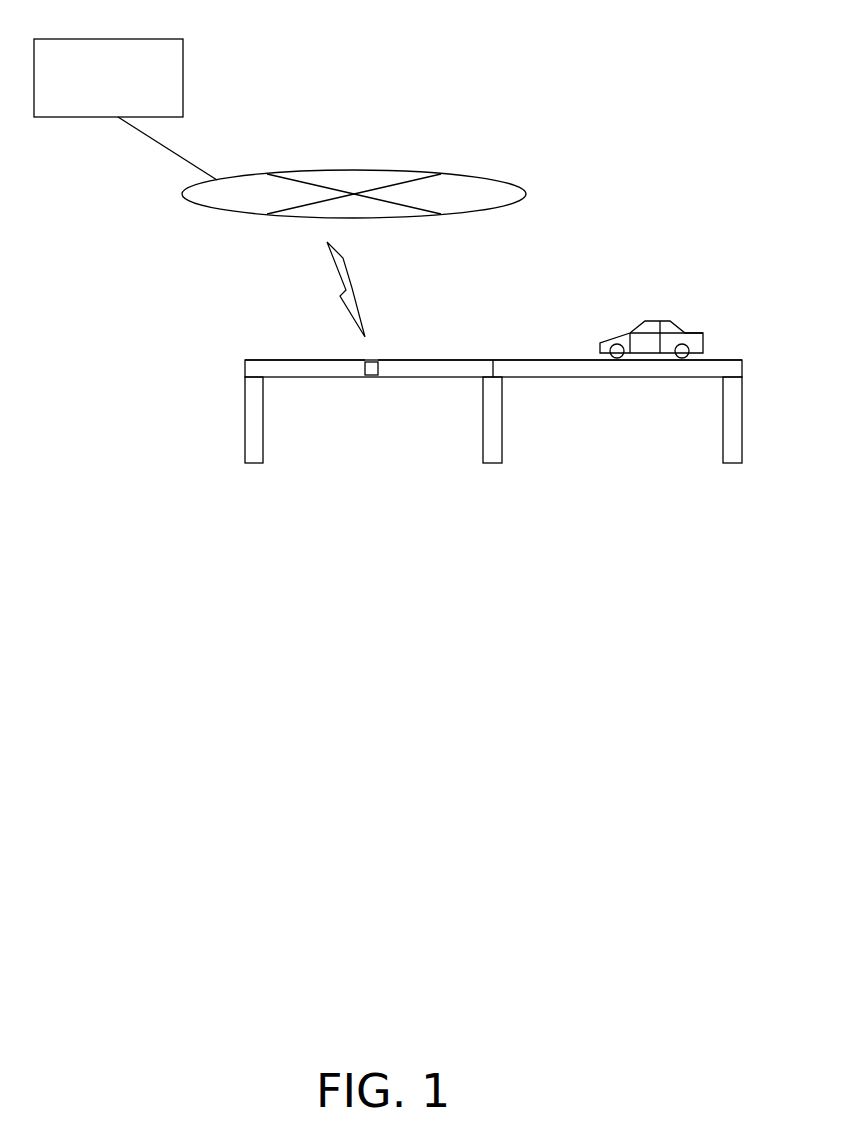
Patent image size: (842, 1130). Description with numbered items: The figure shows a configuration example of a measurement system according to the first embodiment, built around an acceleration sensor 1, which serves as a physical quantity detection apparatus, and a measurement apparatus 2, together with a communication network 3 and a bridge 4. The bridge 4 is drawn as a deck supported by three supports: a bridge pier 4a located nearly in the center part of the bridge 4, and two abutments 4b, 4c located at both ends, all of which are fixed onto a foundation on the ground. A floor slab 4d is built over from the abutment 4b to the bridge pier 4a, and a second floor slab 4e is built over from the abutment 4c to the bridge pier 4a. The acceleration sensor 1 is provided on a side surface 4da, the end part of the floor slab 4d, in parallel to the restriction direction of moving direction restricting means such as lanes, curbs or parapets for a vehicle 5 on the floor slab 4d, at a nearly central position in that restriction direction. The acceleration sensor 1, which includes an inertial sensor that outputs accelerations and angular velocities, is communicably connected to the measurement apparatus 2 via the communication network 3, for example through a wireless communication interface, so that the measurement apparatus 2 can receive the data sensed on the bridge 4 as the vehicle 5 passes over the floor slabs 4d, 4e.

The acceleration sensor 1 is at (375, 378).
The measurement apparatus 2 is at (72, 38).
The communication network 3 is at (483, 178).
The bridge 4 is at (218, 345).
The bridge pier 4a is at (492, 465).
The abutment 4b is at (257, 465).
The abutment 4c is at (730, 465).
The floor slab 4d is at (422, 359).
The side surface 4da is at (290, 359).
The floor slab 4e is at (561, 359).
The vehicle 5 is at (670, 320).